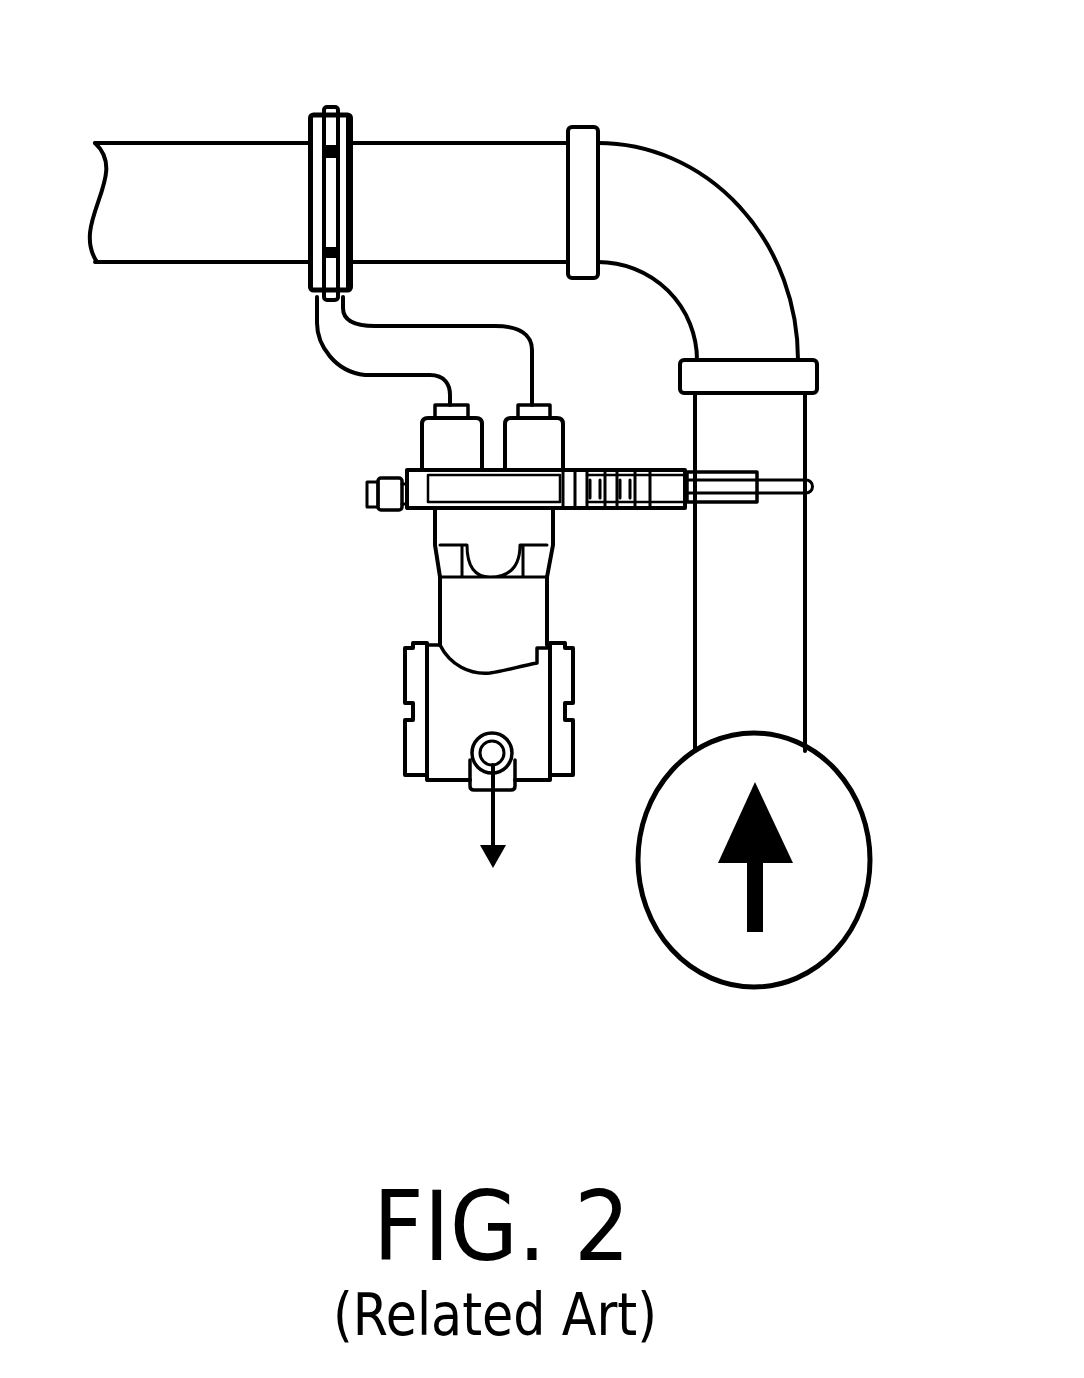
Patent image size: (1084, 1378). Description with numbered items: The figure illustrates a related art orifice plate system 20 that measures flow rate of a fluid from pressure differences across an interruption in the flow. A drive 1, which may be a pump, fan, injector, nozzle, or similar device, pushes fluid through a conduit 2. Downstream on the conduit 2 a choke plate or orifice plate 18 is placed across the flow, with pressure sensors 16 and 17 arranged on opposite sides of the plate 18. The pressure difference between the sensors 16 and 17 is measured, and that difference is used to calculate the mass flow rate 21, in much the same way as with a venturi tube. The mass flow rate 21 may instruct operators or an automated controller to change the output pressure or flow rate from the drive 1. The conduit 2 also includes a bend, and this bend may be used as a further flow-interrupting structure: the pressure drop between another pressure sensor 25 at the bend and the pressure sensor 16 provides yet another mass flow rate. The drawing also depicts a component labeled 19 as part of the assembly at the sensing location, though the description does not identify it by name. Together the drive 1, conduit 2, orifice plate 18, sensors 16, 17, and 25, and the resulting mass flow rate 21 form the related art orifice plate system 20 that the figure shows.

The drive 1 is at (790, 984).
The conduit 2 is at (170, 200).
The pressure sensor 16 is at (352, 130).
The pressure sensor 17 is at (308, 132).
The orifice plate 18 is at (328, 110).
The valve 19 is at (438, 593).
The orifice plate system 20 is at (869, 90).
The mass flow rate 21 is at (487, 820).
The pressure sensor 25 is at (812, 487).